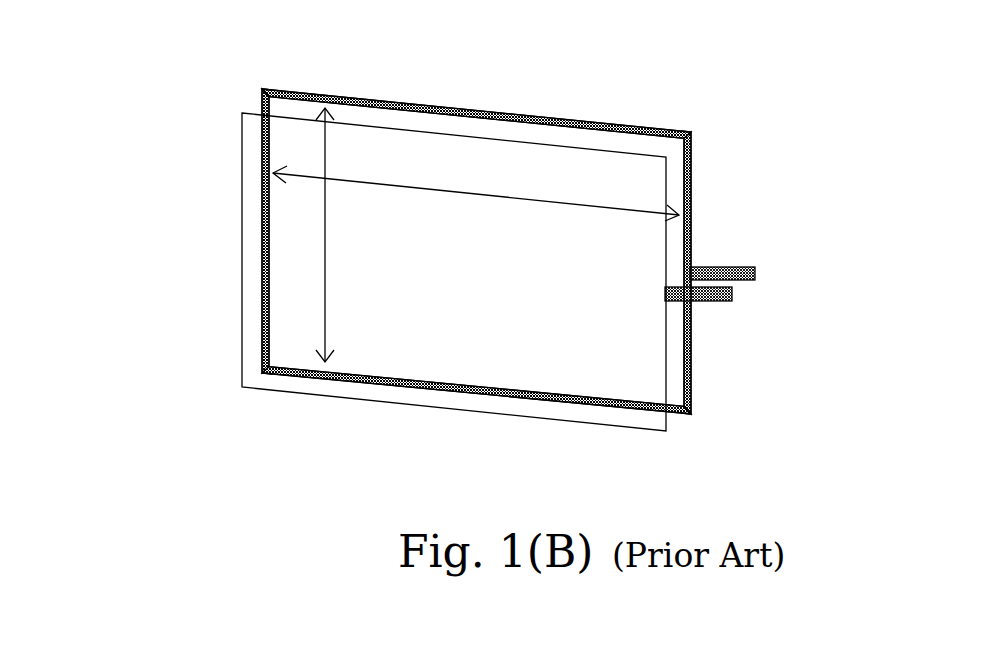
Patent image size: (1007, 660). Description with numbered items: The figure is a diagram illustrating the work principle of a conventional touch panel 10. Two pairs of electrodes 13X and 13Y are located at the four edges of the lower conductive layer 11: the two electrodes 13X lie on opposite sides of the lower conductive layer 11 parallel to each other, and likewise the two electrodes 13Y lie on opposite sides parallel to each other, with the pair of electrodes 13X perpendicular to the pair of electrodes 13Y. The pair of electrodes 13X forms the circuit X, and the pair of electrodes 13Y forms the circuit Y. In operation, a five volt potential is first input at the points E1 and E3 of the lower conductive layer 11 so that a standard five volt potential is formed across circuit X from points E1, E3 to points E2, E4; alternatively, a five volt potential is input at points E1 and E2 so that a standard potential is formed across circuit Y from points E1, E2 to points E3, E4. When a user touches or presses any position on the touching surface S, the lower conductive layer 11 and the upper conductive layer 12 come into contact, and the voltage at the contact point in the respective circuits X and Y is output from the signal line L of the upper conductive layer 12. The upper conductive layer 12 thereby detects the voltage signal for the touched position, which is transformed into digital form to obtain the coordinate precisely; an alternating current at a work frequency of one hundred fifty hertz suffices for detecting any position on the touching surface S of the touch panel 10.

The touch panel 10 is at (153, 504).
The lower conductive layer 11 is at (262, 250).
The upper conductive layer 12 is at (455, 410).
The electrode 13X is at (262, 230).
The electrode 13Y is at (475, 111).
The signal line L is at (718, 302).
The point E1 is at (260, 87).
The point E2 is at (694, 130).
The point E3 is at (259, 375).
The point E4 is at (694, 417).
The circuit X is at (476, 193).
The circuit Y is at (318, 235).
The touching surface S is at (472, 310).